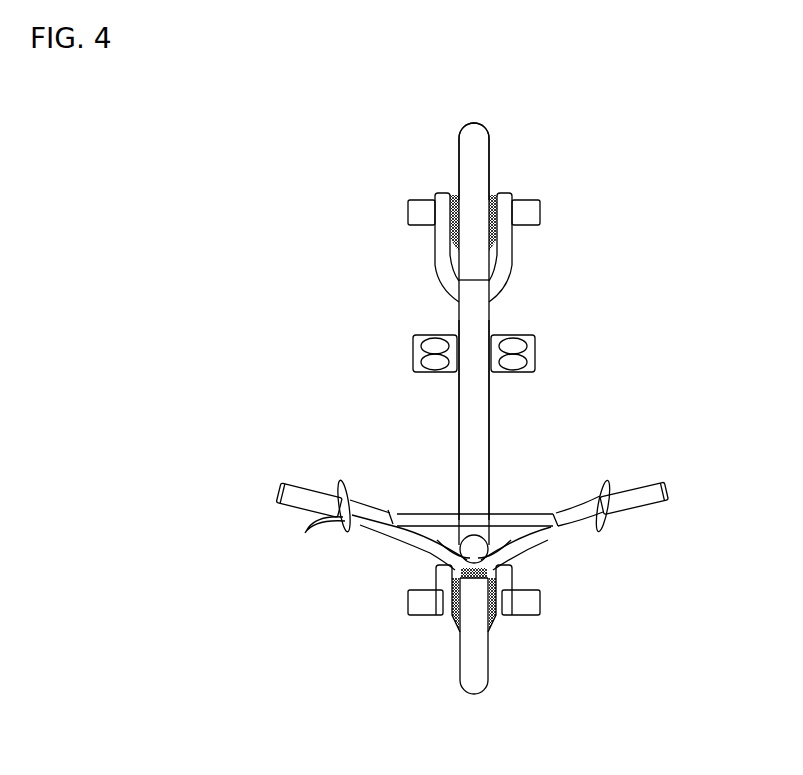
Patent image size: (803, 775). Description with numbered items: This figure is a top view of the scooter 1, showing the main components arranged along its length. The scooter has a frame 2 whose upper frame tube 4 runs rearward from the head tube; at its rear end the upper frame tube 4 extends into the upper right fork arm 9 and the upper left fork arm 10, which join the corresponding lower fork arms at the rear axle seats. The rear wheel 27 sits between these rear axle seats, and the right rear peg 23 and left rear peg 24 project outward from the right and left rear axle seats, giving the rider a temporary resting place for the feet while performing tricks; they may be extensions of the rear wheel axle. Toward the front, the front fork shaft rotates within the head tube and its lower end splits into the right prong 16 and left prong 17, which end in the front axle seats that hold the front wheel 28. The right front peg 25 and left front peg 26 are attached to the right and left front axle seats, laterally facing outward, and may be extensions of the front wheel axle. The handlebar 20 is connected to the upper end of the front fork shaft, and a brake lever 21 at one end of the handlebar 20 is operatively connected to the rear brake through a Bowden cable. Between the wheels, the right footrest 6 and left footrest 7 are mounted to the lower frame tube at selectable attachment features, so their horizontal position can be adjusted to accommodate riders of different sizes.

The scooter 1 is at (668, 276).
The frame 2 is at (455, 417).
The upper frame tube 4 is at (472, 447).
The right footrest 6 is at (413, 347).
The left footrest 7 is at (532, 345).
The upper right fork arm 9 is at (440, 258).
The upper left fork arm 10 is at (505, 262).
The right prong 16 is at (434, 577).
The left prong 17 is at (509, 579).
The handlebar 20 is at (498, 518).
The brake lever 21 is at (350, 529).
The right rear peg 23 is at (420, 215).
The left rear peg 24 is at (527, 218).
The right front peg 25 is at (418, 605).
The left front peg 26 is at (530, 604).
The rear wheel 27 is at (470, 158).
The front wheel 28 is at (470, 676).